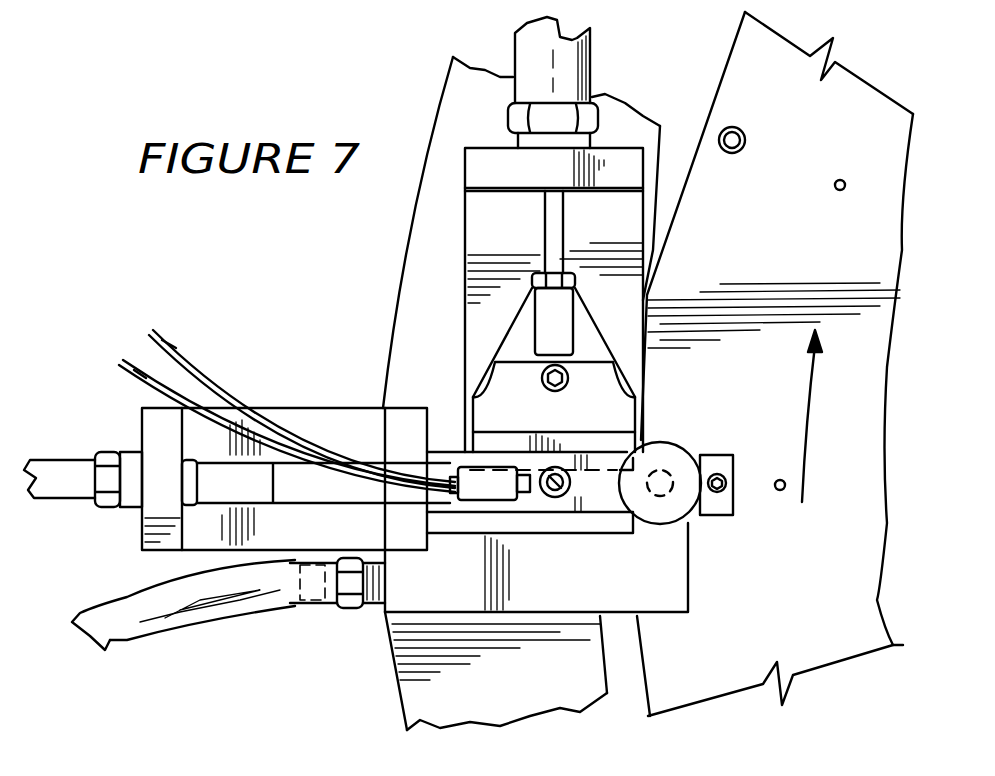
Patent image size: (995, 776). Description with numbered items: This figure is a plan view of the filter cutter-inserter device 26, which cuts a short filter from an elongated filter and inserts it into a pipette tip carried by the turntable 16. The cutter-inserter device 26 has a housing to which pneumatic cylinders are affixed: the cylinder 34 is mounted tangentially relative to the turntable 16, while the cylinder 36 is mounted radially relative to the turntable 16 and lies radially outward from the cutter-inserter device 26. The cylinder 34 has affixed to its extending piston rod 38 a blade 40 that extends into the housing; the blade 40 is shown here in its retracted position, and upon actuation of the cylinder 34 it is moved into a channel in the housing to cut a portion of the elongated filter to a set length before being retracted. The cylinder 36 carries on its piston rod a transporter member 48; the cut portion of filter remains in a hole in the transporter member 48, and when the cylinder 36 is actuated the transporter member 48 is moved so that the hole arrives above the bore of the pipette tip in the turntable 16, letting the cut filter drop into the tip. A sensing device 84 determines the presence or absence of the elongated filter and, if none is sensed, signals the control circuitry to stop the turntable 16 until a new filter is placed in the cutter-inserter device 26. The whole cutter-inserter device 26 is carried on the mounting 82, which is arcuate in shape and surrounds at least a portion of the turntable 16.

The turntable 16 is at (787, 279).
The cutter-inserter device 26 is at (390, 164).
The cylinder 34 is at (572, 53).
The cylinder 36 is at (55, 472).
The piston rod 38 is at (554, 228).
The blade 40 is at (480, 442).
The transporter member 48 is at (560, 498).
The mounting 82 is at (418, 252).
The sensing device 84 is at (483, 490).